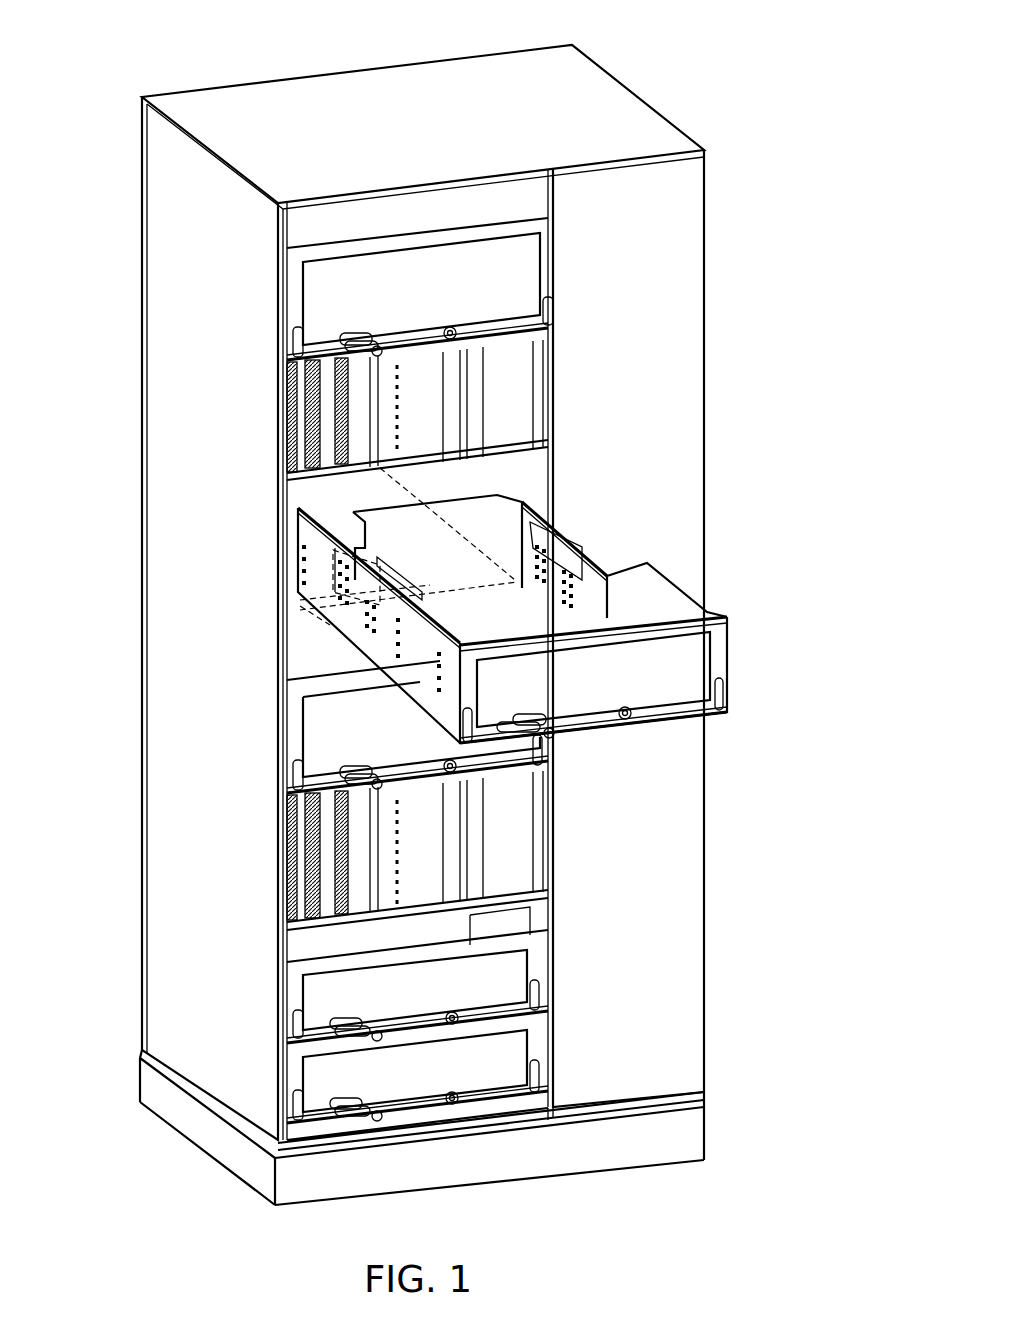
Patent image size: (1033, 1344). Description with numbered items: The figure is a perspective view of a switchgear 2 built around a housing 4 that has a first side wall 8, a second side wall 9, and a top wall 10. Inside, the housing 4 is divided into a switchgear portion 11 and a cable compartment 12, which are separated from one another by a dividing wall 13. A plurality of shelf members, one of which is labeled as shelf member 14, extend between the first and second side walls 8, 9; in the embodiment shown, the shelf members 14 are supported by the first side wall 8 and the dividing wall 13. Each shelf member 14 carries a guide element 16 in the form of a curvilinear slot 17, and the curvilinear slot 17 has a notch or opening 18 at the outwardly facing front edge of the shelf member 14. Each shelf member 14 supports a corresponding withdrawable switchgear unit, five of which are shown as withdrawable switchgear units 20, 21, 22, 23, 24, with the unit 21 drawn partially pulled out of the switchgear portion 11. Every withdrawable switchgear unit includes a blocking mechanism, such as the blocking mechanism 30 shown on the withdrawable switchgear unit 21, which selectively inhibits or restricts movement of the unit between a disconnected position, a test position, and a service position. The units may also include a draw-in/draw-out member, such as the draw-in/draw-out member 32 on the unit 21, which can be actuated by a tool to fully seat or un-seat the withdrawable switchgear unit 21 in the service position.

The switchgear 2 is at (124, 278).
The housing 4 is at (197, 252).
The first side wall 8 is at (172, 425).
The second side wall 9 is at (704, 548).
The top wall 10 is at (632, 125).
The switchgear portion 11 is at (400, 215).
The cable compartment 12 is at (657, 232).
The dividing wall 13 is at (520, 372).
The shelf member 14 is at (372, 490).
The guide element 16 is at (374, 586).
The curvilinear slot 17 is at (333, 558).
The notch or opening 18 is at (340, 603).
The withdrawable switchgear unit 20 is at (322, 297).
The withdrawable switchgear unit 21 is at (680, 660).
The withdrawable switchgear unit 22 is at (333, 710).
The withdrawable switchgear unit 23 is at (320, 990).
The withdrawable switchgear unit 24 is at (322, 1072).
The blocking mechanism 30 is at (575, 726).
The draw-in/draw-out member 32 is at (632, 714).